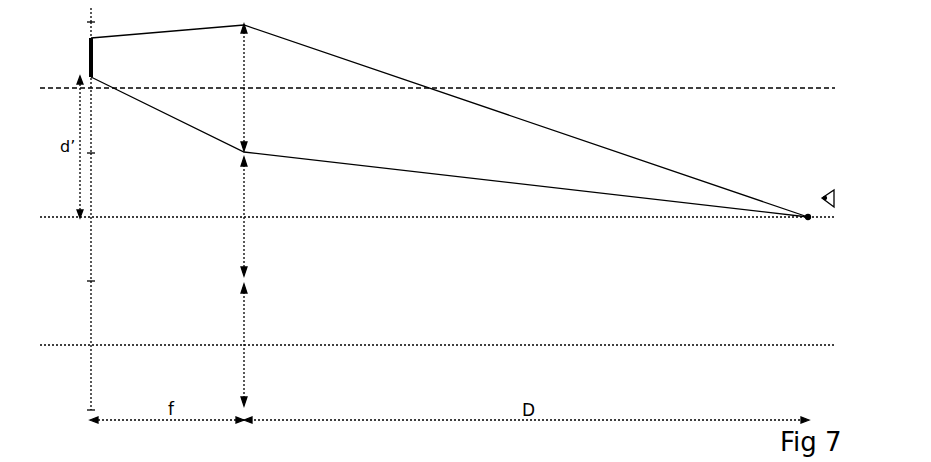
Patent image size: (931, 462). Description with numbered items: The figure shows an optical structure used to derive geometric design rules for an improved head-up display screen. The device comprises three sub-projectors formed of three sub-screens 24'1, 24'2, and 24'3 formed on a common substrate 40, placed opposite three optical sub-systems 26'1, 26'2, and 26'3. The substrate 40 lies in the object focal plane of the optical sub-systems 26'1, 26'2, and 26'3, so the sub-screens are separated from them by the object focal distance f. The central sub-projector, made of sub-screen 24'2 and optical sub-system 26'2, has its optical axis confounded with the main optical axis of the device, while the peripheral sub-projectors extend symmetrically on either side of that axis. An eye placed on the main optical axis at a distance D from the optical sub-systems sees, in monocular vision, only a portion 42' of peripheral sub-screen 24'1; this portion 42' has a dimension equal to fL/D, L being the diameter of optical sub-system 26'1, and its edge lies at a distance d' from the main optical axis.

The substrate 40 is at (91, 20).
The peripheral sub-screen 24'1 is at (56, 87).
The portion of peripheral sub-screen 42' is at (59, 57).
The central sub-screen 24'2 is at (62, 217).
The peripheral sub-screen 24'3 is at (61, 345).
The optical sub-system 26'1 is at (292, 84).
The optical sub-system 26'2 is at (290, 206).
The optical sub-system 26'3 is at (272, 370).